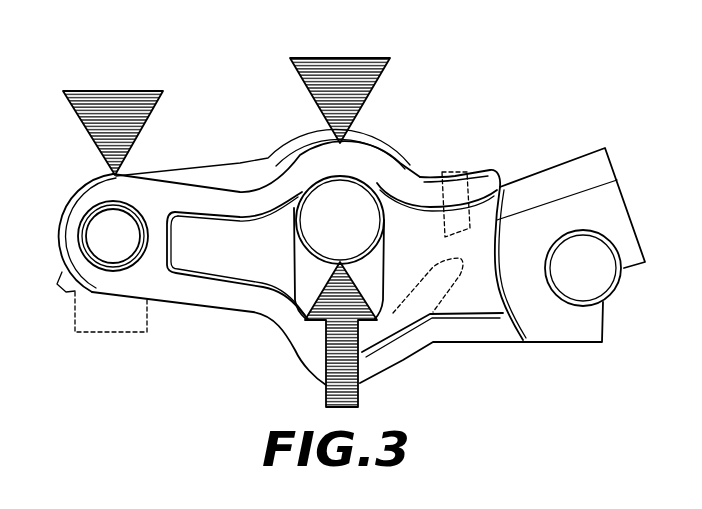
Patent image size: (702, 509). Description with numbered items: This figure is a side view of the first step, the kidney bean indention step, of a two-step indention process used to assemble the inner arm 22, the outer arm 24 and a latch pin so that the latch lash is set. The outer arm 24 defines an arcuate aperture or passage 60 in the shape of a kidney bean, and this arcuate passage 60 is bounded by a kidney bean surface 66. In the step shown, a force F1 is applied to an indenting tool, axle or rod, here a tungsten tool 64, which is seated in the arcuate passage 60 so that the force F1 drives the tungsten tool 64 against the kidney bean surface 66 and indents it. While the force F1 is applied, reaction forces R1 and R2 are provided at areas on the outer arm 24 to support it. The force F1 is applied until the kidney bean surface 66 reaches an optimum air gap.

The inner arm 22 is at (232, 178).
The outer arm 24 is at (80, 203).
The arcuate passage 60 is at (297, 268).
The tungsten tool 64 is at (332, 212).
The kidney bean surface 66 is at (376, 184).
The reaction force R1 is at (113, 91).
The reaction force R2 is at (338, 58).
The force F1 is at (360, 400).